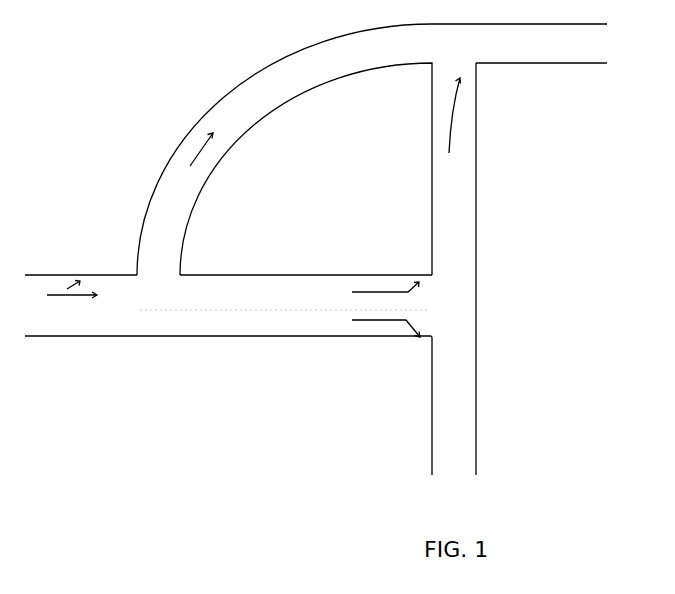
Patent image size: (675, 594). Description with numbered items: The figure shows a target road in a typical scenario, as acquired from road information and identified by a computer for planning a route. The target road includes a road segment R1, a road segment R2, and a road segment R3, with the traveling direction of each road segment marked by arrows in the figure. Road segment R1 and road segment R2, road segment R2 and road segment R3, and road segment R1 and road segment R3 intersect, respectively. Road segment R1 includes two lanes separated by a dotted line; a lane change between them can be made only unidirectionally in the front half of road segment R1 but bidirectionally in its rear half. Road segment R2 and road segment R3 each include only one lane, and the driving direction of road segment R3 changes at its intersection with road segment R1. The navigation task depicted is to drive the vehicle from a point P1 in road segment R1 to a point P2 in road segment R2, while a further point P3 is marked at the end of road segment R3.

The road segment R1 is at (228, 306).
The road segment R2 is at (372, 149).
The road segment R3 is at (518, 269).
The point P1 is at (93, 323).
The point P2 is at (505, 45).
The second outlet port P3 is at (456, 382).